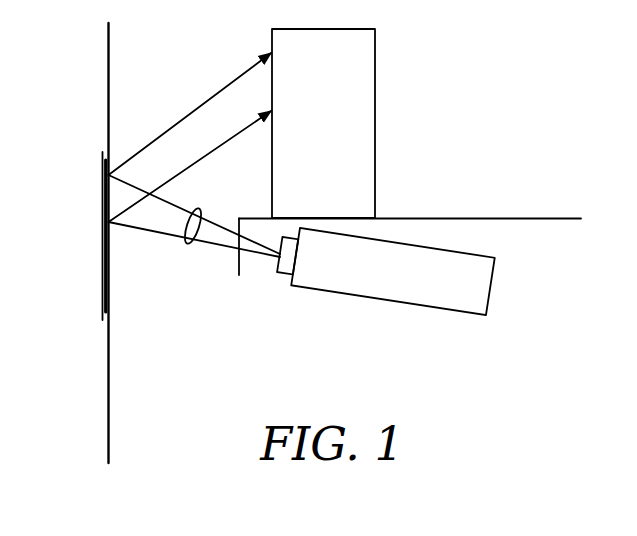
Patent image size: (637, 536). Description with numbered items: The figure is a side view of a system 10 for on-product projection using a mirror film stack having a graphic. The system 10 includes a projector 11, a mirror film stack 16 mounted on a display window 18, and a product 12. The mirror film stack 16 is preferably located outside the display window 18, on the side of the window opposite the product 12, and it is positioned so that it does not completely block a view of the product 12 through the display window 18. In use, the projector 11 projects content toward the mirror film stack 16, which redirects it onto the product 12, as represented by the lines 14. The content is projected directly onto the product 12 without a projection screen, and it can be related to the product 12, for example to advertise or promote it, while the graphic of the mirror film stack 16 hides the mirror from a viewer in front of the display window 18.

The system 10 is at (565, 62).
The projector 11 is at (478, 286).
The product 12 is at (366, 117).
The lines 14 is at (187, 243).
The mirror film stack 16 is at (100, 263).
The display window 18 is at (108, 393).